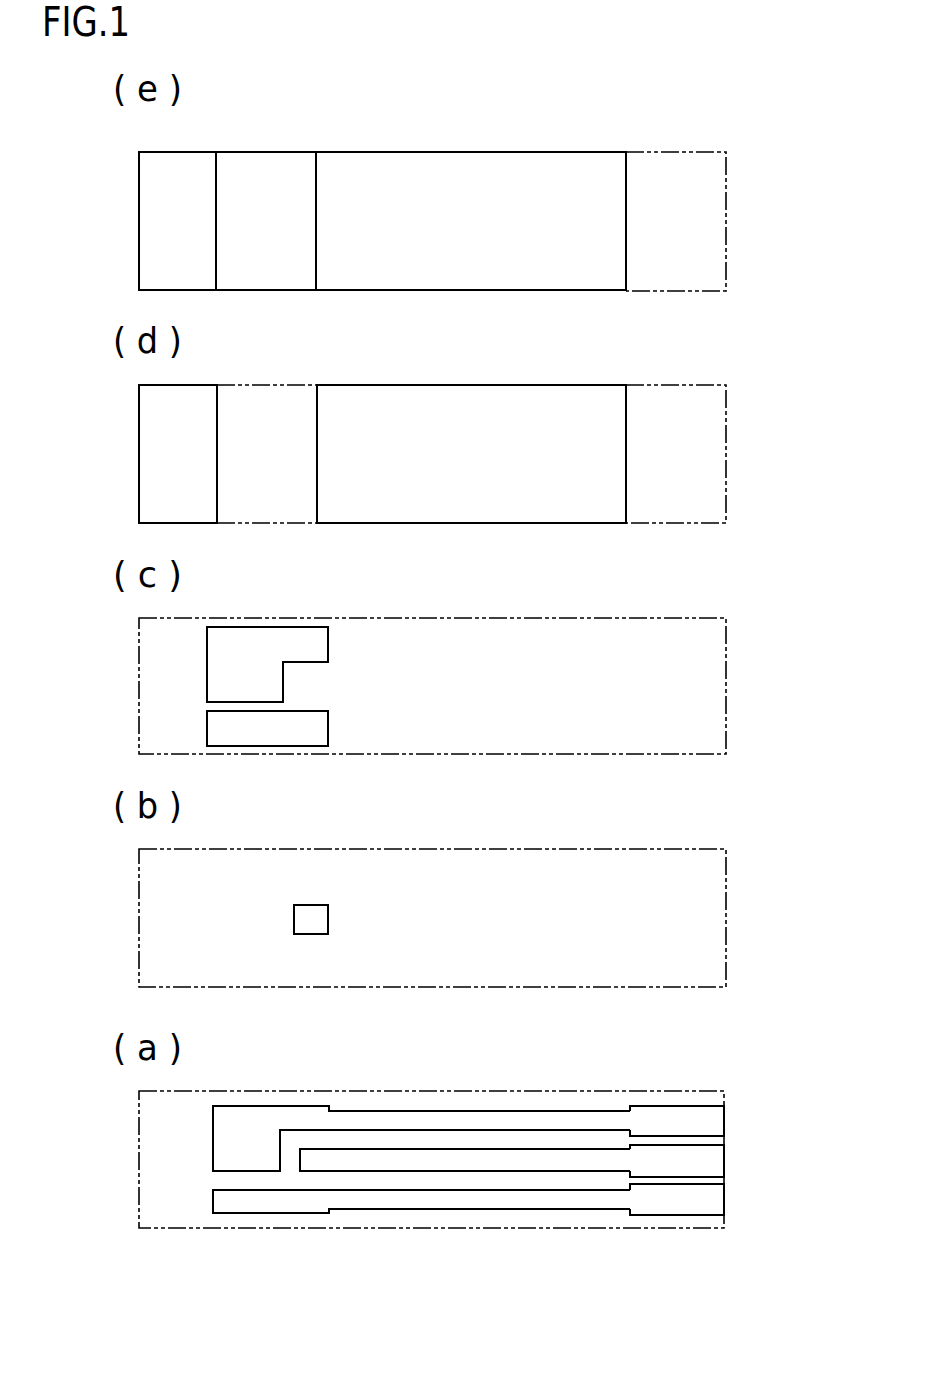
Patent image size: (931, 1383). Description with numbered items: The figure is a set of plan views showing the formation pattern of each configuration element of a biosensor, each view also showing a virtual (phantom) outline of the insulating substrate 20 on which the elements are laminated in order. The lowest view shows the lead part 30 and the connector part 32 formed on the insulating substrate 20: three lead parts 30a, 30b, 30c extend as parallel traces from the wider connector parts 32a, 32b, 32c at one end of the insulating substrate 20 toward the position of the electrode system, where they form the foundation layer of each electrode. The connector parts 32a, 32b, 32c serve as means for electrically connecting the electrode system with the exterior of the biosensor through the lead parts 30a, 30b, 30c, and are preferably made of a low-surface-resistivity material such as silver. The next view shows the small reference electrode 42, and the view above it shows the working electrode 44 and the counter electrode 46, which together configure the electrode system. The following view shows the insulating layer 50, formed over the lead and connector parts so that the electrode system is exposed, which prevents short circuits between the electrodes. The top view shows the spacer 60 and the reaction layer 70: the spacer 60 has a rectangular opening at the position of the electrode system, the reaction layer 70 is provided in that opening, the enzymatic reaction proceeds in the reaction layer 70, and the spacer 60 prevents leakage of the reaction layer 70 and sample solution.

The insulating substrate 20 is at (676, 1090).
The lead part 30 is at (421, 1113).
The lead part 30a is at (430, 1158).
The lead part 30b is at (477, 1198).
The lead part 30c is at (384, 1118).
The connector part 32 is at (729, 1152).
The connector part 32a is at (724, 1150).
The connector part 32b is at (705, 1192).
The connector part 32c is at (724, 1110).
The reference electrode 42 is at (328, 917).
The working electrode 44 is at (328, 729).
The counter electrode 46 is at (328, 651).
The insulating layer 50 is at (191, 396).
The spacer 60 is at (191, 163).
The reaction layer 70 is at (272, 163).